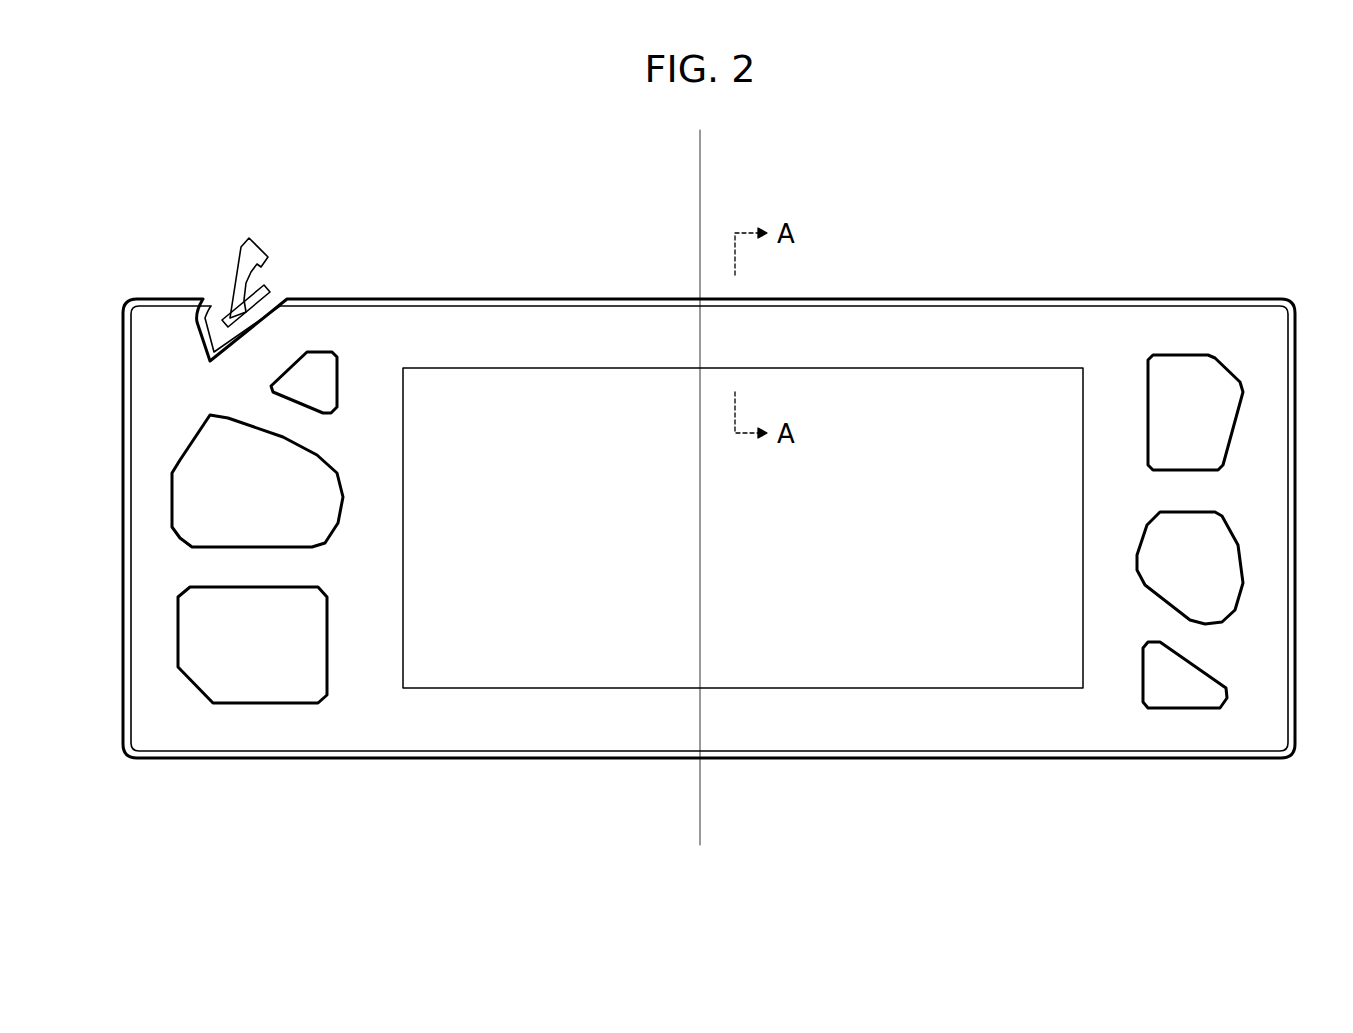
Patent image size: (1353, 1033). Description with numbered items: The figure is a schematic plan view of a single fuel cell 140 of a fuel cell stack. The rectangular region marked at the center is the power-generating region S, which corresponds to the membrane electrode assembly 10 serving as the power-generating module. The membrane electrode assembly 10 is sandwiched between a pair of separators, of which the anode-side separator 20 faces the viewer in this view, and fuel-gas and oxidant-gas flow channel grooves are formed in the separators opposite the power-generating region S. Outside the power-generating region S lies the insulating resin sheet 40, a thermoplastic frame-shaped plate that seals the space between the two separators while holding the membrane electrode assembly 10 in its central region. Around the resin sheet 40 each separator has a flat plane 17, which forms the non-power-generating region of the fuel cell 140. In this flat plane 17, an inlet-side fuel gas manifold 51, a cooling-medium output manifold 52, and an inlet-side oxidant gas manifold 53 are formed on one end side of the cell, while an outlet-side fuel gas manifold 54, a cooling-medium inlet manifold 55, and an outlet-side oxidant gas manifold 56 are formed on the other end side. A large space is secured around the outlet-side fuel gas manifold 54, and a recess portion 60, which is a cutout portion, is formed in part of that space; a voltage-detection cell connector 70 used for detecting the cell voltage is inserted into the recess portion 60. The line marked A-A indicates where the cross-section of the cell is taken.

The membrane electrode assembly 10 is at (752, 612).
The flat plane 17 is at (586, 733).
The anode-side separator 20 is at (905, 720).
The insulating resin sheet 40 is at (904, 325).
The inlet-side fuel gas manifold 51 is at (1195, 685).
The cooling-medium output manifold 52 is at (1195, 575).
The inlet-side oxidant gas manifold 53 is at (1195, 402).
The outlet-side fuel gas manifold 54 is at (315, 372).
The cooling-medium inlet manifold 55 is at (205, 495).
The outlet-side oxidant gas manifold 56 is at (205, 635).
The recess portion 60 is at (195, 315).
The voltage-detection cell connector 70 is at (253, 247).
The fuel cell 140 is at (1183, 232).
The power-generating region S is at (958, 478).